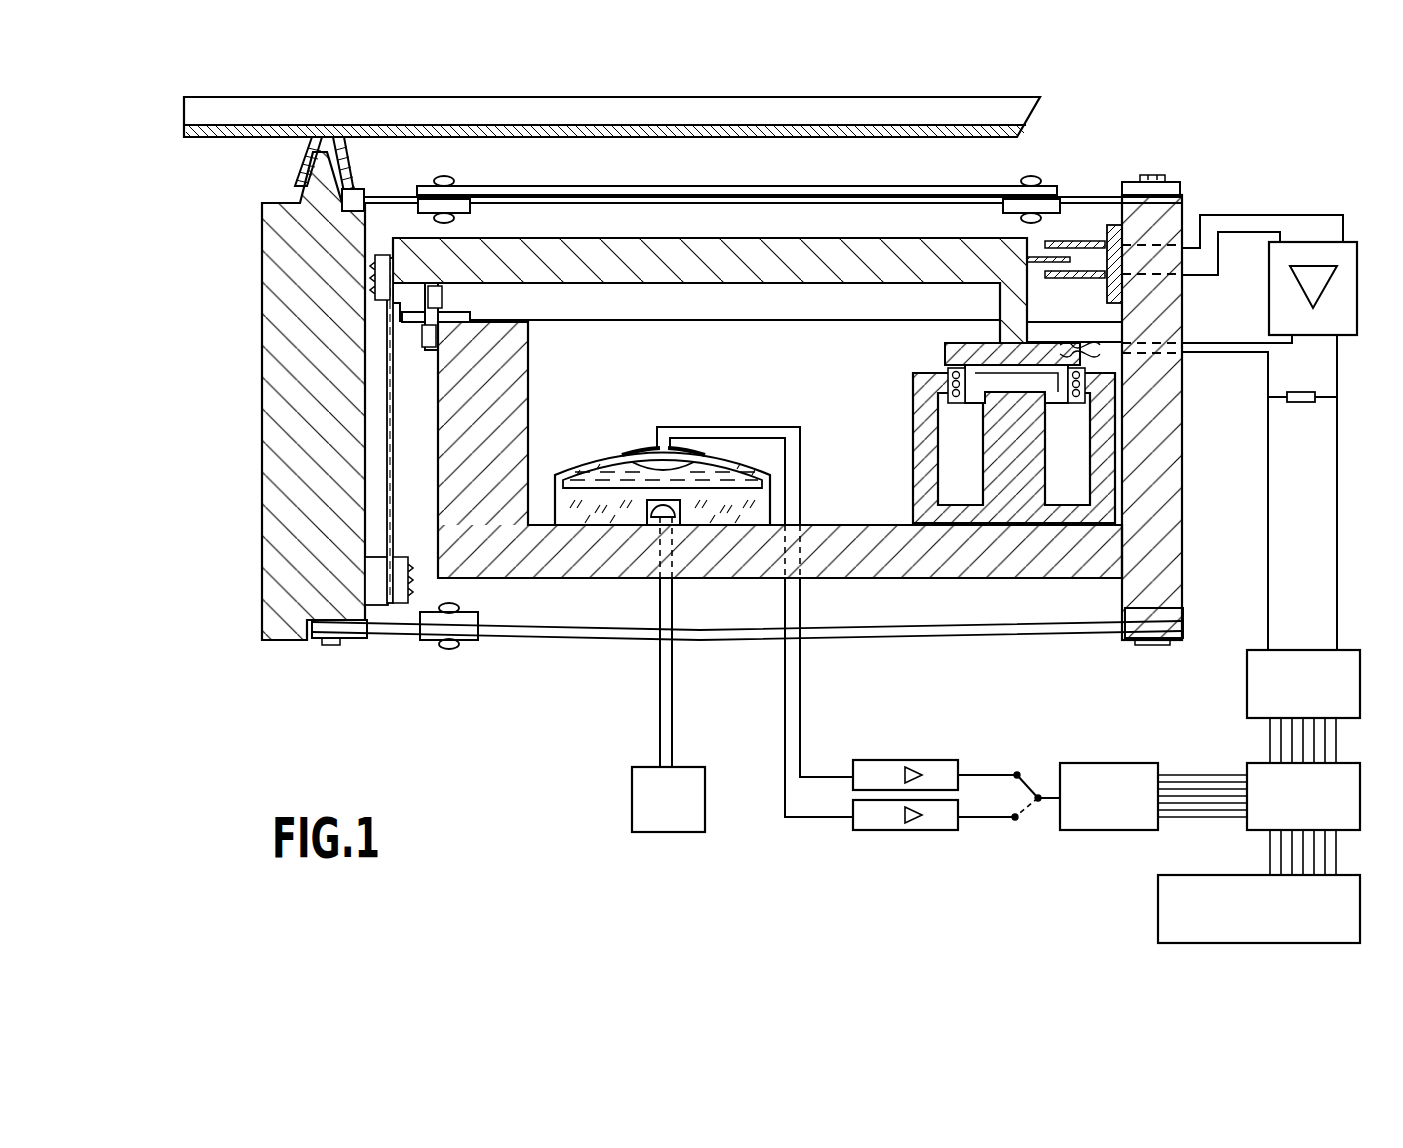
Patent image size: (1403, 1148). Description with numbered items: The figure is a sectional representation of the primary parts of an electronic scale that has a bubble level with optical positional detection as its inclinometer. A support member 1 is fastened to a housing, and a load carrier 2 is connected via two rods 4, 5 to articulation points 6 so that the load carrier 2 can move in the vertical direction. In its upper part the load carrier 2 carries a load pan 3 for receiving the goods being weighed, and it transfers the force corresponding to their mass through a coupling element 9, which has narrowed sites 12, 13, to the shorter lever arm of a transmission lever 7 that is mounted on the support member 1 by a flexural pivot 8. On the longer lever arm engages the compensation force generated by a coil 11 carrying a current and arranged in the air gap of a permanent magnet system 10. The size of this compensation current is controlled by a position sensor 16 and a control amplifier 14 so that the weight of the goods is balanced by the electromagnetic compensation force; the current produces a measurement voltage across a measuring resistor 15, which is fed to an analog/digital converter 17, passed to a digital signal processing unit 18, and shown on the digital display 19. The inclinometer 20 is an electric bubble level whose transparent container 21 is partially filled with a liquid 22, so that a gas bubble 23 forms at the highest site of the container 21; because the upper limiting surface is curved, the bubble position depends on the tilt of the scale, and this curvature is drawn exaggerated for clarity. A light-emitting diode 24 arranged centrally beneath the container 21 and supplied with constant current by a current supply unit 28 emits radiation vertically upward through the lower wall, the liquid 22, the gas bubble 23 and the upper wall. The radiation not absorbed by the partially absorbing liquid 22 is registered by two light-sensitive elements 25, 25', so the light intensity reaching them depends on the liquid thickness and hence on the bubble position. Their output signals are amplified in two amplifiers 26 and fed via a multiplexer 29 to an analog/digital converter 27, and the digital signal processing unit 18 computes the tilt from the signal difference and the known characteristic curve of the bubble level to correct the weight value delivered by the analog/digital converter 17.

The support member 1 is at (515, 380).
The load carrier 2 is at (277, 432).
The load pan 3 is at (1027, 130).
The rod 4 is at (782, 190).
The rod 5 is at (640, 642).
The articulation points 6 is at (390, 197).
The transmission lever 7 is at (600, 247).
The flexural pivot 8 is at (422, 338).
The coupling element 9 is at (392, 445).
The permanent magnet system 10 is at (915, 485).
The coil 11 is at (940, 372).
The narrowed site 12 is at (383, 320).
The narrowed site 13 is at (395, 545).
The control amplifier 14 is at (1322, 240).
The measuring resistor 15 is at (1283, 410).
The position sensor 16 is at (1070, 238).
The analog/digital converter 17 is at (1256, 652).
The digital signal processing unit 18 is at (1252, 770).
The digital display 19 is at (1170, 905).
The inclinometer 20 is at (612, 420).
The transparent container 21 is at (580, 470).
The liquid 22 is at (722, 477).
The gas bubble 23 is at (667, 460).
The light-emitting diode 24 is at (668, 525).
The light-sensitive element 25 is at (641, 421).
The light-sensitive element 25' is at (725, 403).
The amplifiers 26 is at (873, 810).
The analog/digital converter 27 is at (1090, 770).
The current supply unit 28 is at (655, 792).
The multiplexer 29 is at (1037, 790).